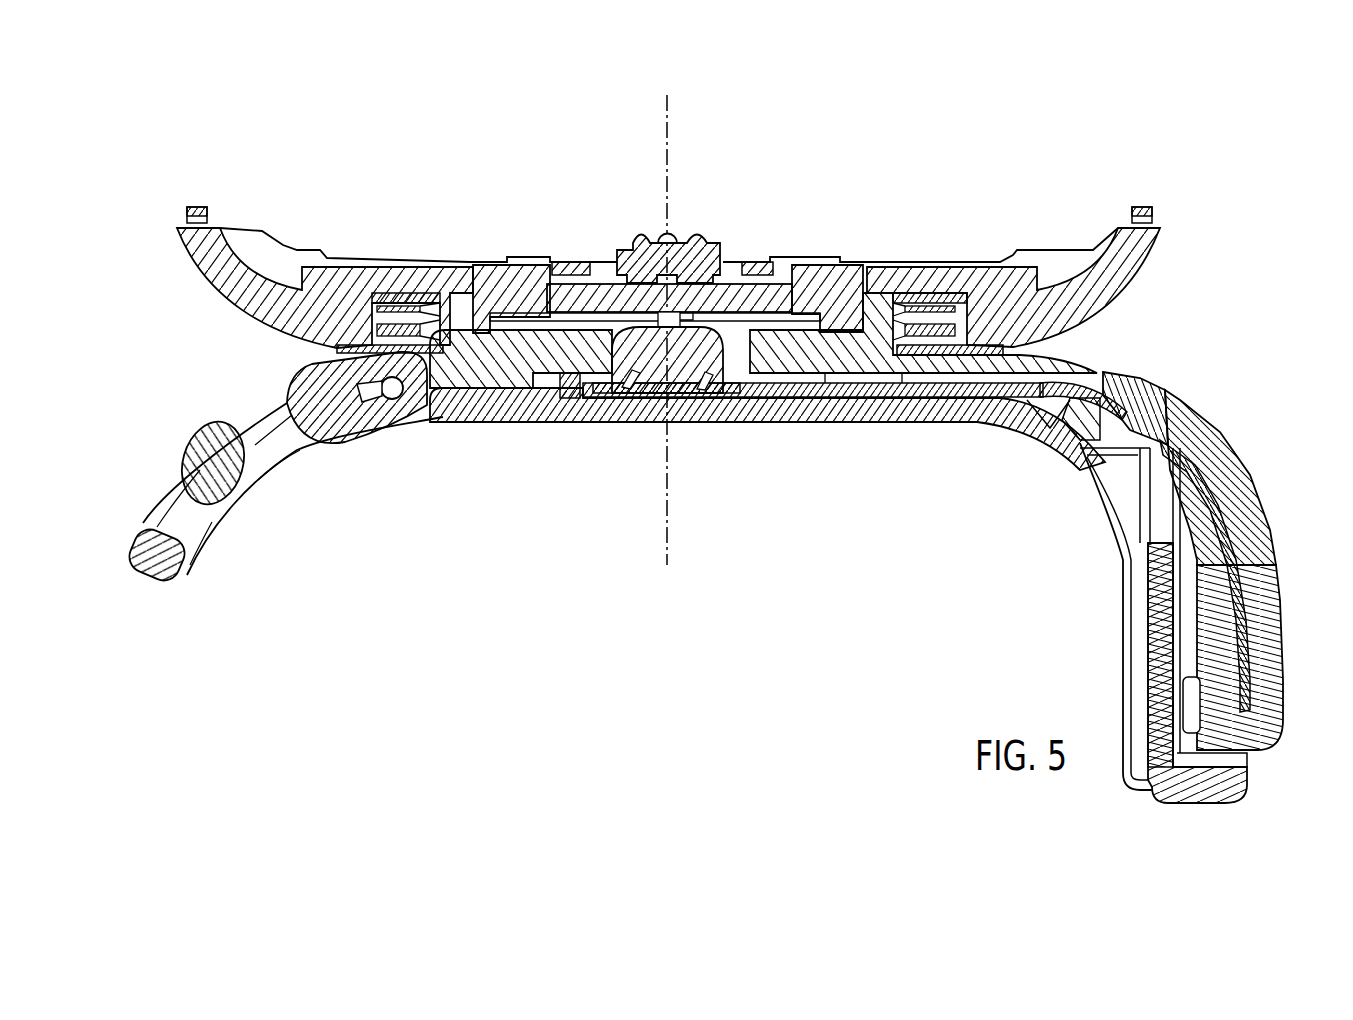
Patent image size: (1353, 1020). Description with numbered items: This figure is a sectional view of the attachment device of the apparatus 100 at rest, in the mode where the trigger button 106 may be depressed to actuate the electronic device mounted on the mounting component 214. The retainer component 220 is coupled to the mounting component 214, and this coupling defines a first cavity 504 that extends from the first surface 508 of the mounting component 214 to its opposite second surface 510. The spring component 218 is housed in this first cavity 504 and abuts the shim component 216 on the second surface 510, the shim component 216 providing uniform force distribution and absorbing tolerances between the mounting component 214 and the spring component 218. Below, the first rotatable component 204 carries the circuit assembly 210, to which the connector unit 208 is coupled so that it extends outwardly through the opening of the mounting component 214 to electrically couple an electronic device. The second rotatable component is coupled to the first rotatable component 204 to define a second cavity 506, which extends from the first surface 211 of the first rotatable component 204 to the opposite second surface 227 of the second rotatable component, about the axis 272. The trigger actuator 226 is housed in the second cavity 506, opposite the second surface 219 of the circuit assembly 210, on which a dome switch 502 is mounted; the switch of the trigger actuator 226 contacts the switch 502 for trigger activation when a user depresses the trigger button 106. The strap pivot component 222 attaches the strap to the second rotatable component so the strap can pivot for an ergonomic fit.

The apparatus 100 is at (197, 134).
The trigger button 106 is at (1182, 405).
The first rotatable component 204 is at (490, 280).
The connector unit 208 is at (694, 236).
The circuit assembly 210 is at (750, 294).
The first surface 211 is at (546, 312).
The mounting component 214 is at (1045, 288).
The shim component 216 is at (406, 288).
The spring component 218 is at (915, 318).
The second surface 219 is at (579, 318).
The retainer component 220 is at (343, 343).
The strap pivot component 222 is at (340, 440).
The trigger actuator 226 is at (660, 329).
The second surface 227 is at (563, 385).
The axis 272 is at (672, 330).
The switch 502 is at (675, 308).
The first cavity 504 is at (958, 305).
The second cavity 506 is at (748, 329).
The first surface 508 is at (933, 308).
The second surface 510 is at (340, 350).